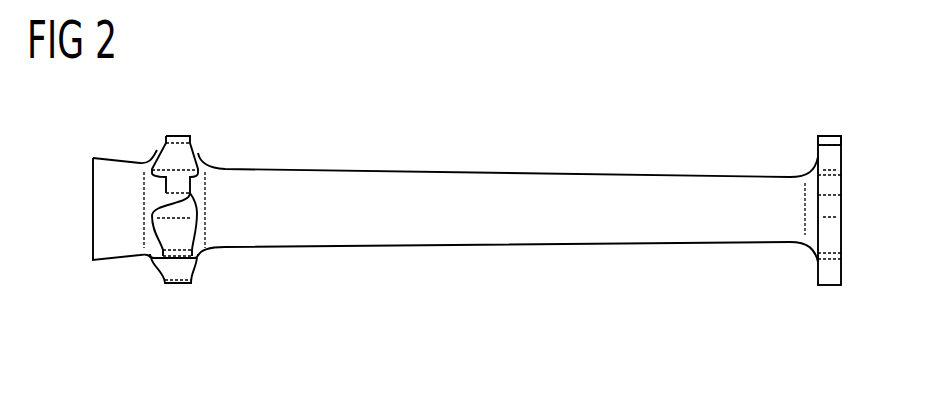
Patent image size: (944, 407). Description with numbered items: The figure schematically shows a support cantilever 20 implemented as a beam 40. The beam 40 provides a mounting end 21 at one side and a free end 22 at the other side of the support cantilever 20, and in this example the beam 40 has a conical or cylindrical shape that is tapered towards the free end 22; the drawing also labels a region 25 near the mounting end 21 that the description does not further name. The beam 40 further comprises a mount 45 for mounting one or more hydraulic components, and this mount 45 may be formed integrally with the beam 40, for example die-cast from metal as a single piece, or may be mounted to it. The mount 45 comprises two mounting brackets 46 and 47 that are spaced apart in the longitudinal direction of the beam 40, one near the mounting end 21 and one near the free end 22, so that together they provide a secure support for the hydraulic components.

The support cantilever 20 is at (367, 113).
The mounting end 21 is at (92, 228).
The free end 22 is at (842, 238).
The root platform surface 25 is at (92, 172).
The beam 40 is at (290, 250).
The mount 45 is at (193, 303).
The mounting bracket 46 is at (179, 138).
The mounting bracket 47 is at (828, 140).